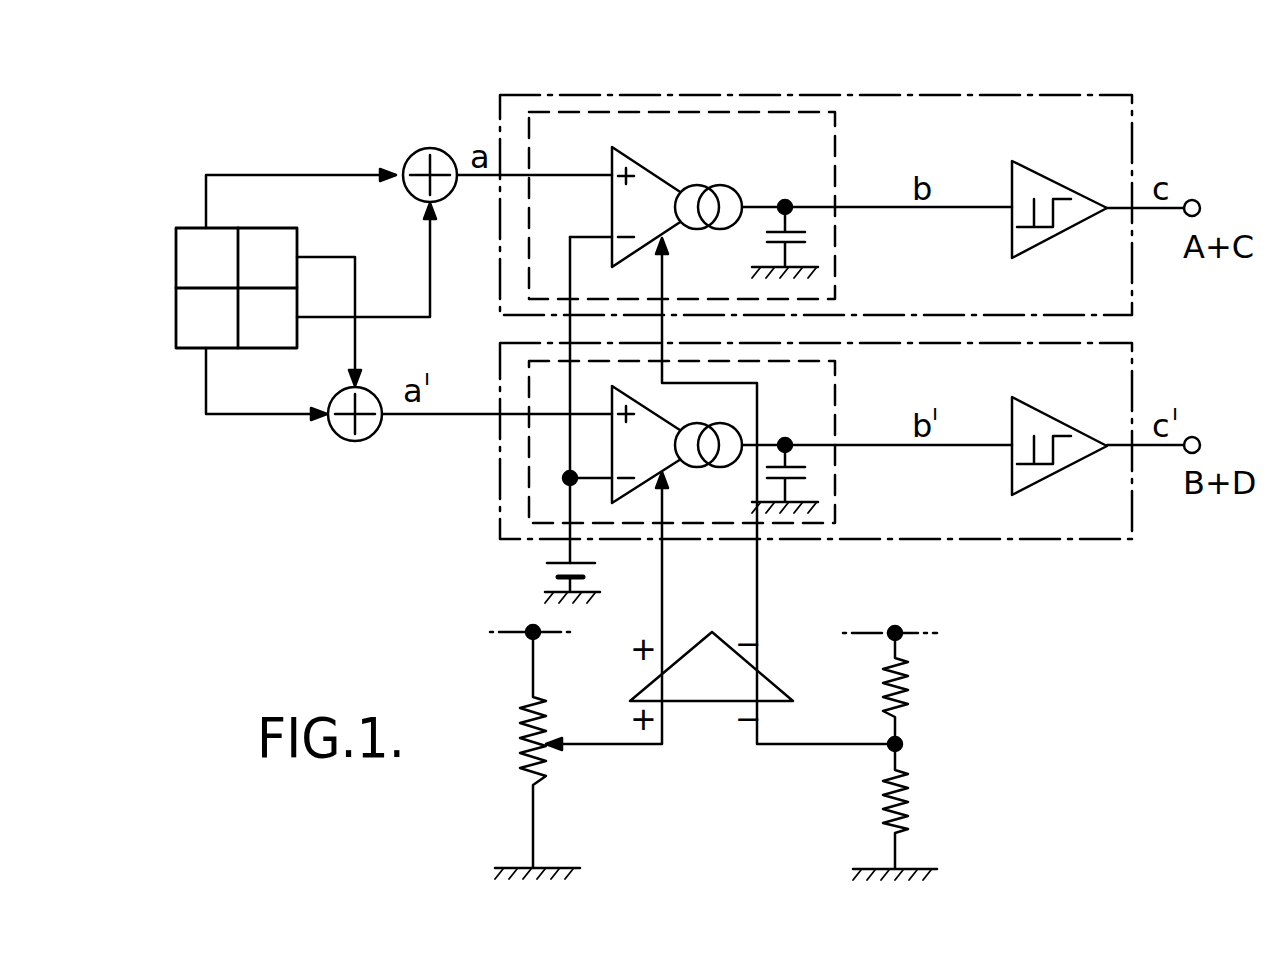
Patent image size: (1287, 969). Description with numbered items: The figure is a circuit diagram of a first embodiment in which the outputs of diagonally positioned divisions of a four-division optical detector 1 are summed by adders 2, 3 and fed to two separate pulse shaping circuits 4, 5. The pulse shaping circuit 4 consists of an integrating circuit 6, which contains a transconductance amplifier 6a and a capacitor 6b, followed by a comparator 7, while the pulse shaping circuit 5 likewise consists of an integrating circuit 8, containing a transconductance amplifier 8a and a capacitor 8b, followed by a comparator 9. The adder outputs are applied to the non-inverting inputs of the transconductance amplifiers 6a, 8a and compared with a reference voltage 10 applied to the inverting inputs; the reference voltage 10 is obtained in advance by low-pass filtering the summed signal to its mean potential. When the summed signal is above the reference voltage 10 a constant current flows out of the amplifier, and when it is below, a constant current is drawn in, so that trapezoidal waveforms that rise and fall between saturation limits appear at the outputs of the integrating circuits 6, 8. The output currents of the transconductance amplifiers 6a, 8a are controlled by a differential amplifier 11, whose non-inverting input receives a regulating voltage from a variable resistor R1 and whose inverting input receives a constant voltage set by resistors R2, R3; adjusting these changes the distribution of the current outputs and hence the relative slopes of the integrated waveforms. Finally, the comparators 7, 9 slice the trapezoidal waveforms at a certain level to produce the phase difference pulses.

The 4-division optical detector 1 is at (176, 303).
The adder 2 is at (430, 148).
The adder 3 is at (343, 441).
The pulse shaping circuit 4 is at (962, 95).
The pulse shaping circuit 5 is at (1000, 540).
The integrating circuit 6 is at (835, 157).
The transconductance amplifier 6a is at (645, 165).
The capacitor 6b is at (770, 238).
The comparator 7 is at (1038, 170).
The integrating circuit 8 is at (835, 485).
The transconductance amplifier 8a is at (678, 468).
The capacitor 8b is at (800, 465).
The comparator 9 is at (1065, 465).
The reference voltage 10 is at (545, 573).
The differential amplifier 11 is at (718, 701).
The variable resistor R1 is at (527, 752).
The resistor R2 is at (896, 688).
The resistor R3 is at (901, 812).